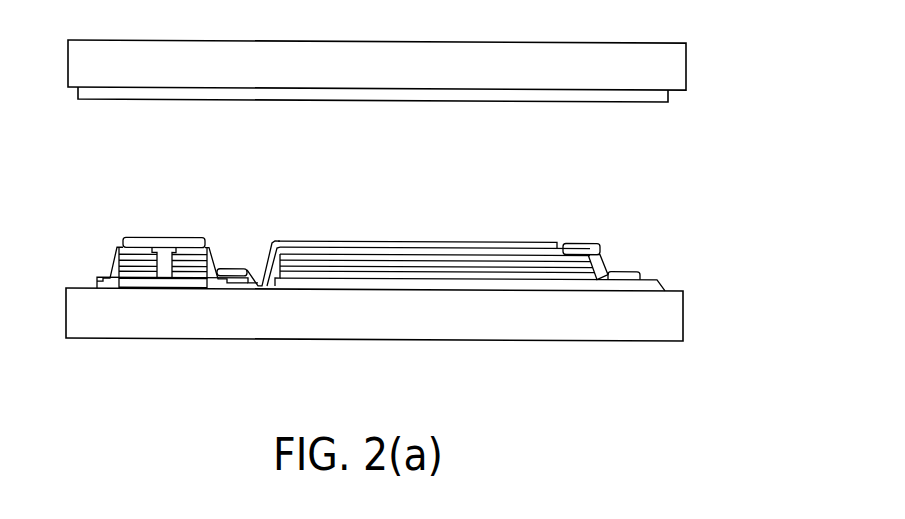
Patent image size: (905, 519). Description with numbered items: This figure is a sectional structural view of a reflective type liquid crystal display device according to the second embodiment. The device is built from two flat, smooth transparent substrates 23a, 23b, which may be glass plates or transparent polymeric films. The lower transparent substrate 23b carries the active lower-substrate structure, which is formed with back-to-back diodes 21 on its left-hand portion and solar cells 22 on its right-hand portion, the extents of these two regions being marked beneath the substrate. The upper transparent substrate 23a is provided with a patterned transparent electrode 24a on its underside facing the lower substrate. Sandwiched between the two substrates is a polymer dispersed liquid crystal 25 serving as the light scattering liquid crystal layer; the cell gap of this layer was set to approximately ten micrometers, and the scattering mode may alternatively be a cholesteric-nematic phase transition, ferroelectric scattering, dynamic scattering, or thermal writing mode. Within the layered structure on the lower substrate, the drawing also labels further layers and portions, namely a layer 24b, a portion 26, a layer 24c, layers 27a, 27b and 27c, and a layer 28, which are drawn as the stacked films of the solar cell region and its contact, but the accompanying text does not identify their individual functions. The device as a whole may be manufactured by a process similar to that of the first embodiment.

The transparent substrate 23a is at (663, 64).
The patterned transparent electrode 24a is at (653, 94).
The polymer dispersed liquid crystal 25 is at (480, 164).
The pixel electrode 24b is at (533, 242).
The contact portion 26 is at (560, 242).
The transparent electrode 24c is at (603, 251).
The first insulating film 27a is at (597, 251).
The second insulating film 27b is at (593, 261).
The third insulating film 27c is at (610, 270).
The base insulating film 28 is at (605, 286).
The transparent substrate 23b is at (603, 308).
The back-to-back diodes 21 is at (248, 351).
The solar cells 22 is at (588, 348).